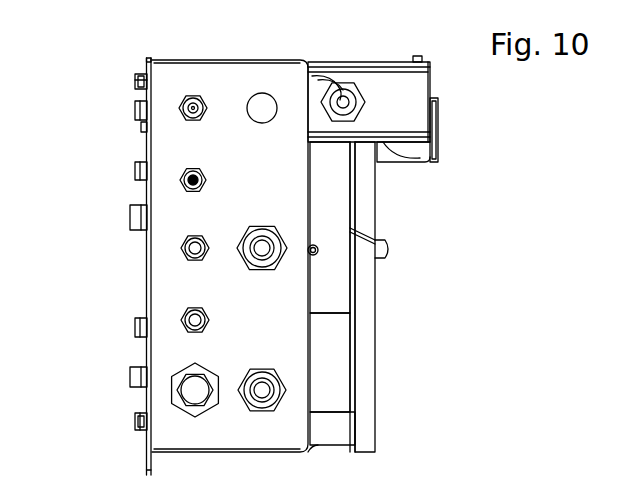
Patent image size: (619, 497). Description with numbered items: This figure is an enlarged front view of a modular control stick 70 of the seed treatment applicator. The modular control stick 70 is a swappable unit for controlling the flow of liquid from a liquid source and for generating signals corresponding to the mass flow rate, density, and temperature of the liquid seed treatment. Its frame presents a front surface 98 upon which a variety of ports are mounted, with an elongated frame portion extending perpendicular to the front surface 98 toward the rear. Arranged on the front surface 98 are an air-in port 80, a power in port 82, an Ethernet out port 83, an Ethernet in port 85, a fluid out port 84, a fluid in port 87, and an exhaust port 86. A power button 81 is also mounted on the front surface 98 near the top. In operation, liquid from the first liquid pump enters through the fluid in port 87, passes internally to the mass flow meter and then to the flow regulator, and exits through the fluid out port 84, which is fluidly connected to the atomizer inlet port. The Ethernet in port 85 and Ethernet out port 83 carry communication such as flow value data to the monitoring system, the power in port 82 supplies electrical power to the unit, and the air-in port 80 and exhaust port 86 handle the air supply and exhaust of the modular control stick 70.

The modular control stick 70 is at (153, 40).
The air-in port 80 is at (200, 92).
The power button 81 is at (266, 93).
The power in port 82 is at (200, 168).
The Ethernet out port 83 is at (200, 235).
The fluid out port 84 is at (268, 226).
The Ethernet in port 85 is at (200, 307).
The exhaust port 86 is at (200, 364).
The fluid in port 87 is at (268, 367).
The front surface 98 is at (274, 171).